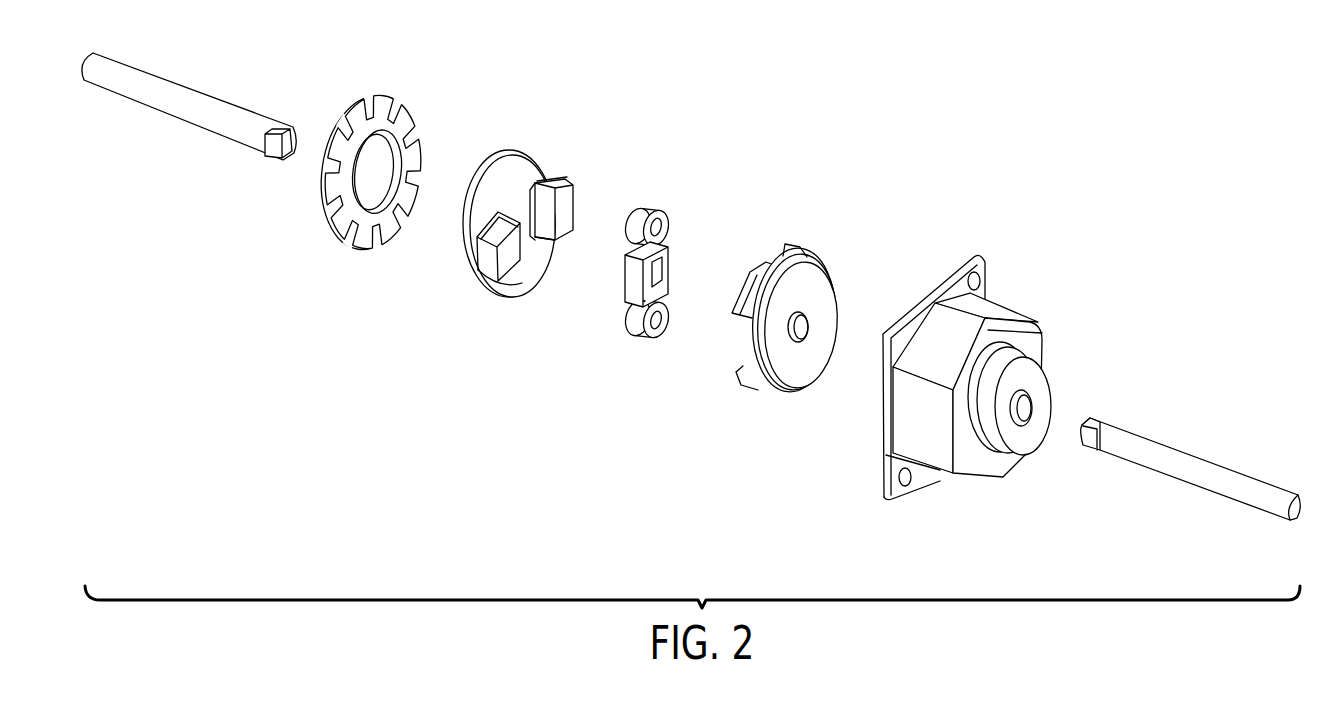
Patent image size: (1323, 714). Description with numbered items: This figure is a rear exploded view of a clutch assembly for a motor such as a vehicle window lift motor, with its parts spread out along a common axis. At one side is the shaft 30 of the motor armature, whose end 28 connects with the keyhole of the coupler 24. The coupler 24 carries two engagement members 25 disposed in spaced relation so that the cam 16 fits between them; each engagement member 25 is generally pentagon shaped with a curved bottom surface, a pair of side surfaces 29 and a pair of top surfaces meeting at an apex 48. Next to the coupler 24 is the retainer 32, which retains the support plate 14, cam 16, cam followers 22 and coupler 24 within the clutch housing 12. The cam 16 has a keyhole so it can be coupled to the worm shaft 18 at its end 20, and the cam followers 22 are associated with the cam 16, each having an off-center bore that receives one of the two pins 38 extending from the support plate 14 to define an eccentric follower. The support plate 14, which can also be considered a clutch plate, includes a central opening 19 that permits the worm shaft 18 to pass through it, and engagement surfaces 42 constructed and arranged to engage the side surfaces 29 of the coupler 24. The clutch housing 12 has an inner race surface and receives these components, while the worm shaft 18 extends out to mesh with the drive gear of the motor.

The clutch housing 12 is at (1007, 328).
The support plate 14 is at (797, 319).
The cam 16 is at (672, 257).
The worm shaft 18 is at (1148, 450).
The central opening 19 is at (805, 323).
The end 20 is at (1090, 447).
The cam followers 22 is at (648, 208).
The coupler 24 is at (513, 182).
The engagement members 25 is at (563, 215).
The end 28 is at (273, 150).
The side surfaces 29 is at (557, 181).
The shaft 30 is at (205, 103).
The retainer 32 is at (407, 103).
The pins 38 is at (770, 262).
The engagement surfaces 42 is at (789, 250).
The apex 48 is at (545, 238).